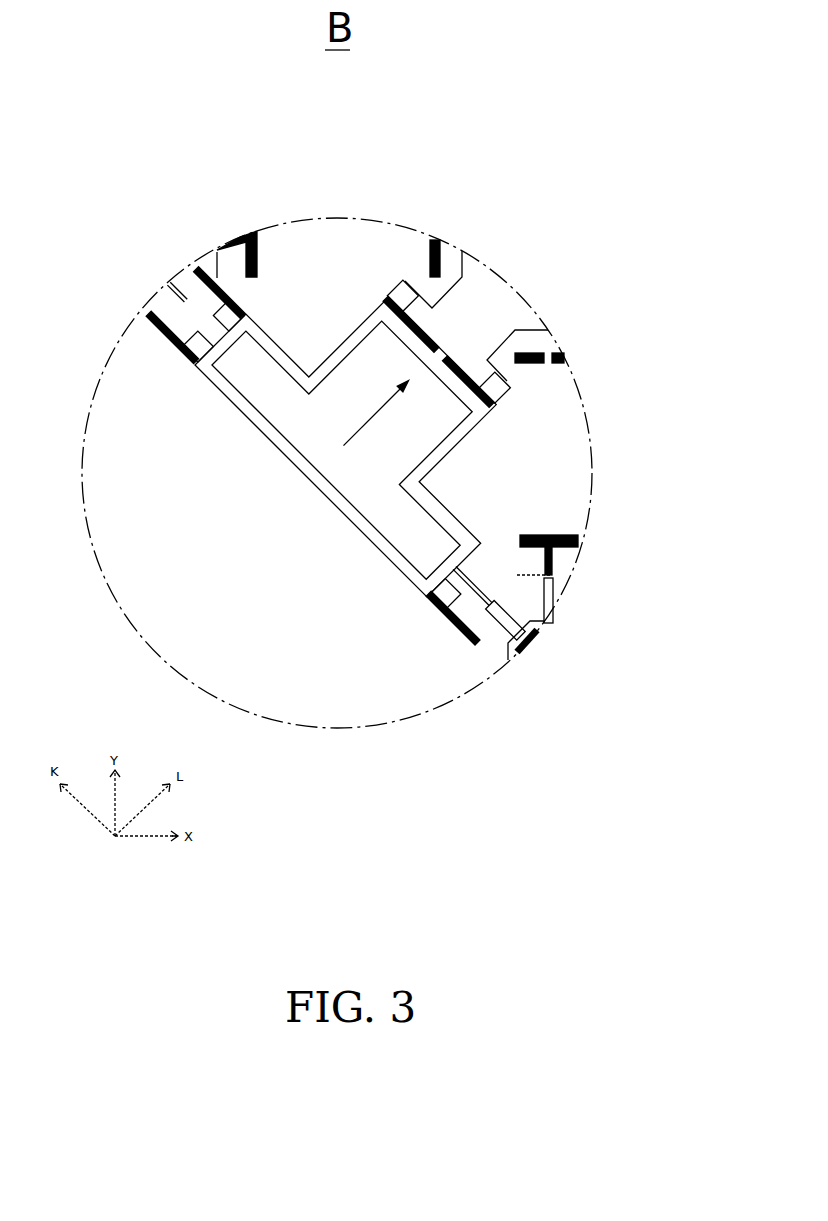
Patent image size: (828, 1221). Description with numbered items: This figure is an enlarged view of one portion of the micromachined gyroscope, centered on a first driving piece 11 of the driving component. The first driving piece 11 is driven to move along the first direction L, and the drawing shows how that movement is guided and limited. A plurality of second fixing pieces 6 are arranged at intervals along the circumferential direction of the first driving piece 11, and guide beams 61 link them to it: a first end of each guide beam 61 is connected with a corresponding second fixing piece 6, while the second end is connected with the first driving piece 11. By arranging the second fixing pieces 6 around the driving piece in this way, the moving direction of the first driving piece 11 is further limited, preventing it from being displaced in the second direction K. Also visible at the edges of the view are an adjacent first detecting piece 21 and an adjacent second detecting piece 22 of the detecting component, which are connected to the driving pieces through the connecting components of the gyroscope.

The first driving piece 11 is at (322, 482).
The second fixing piece 6 is at (407, 283).
The guide beam 61 is at (420, 326).
The first detecting piece 21 is at (318, 287).
The second detecting piece 22 is at (565, 502).